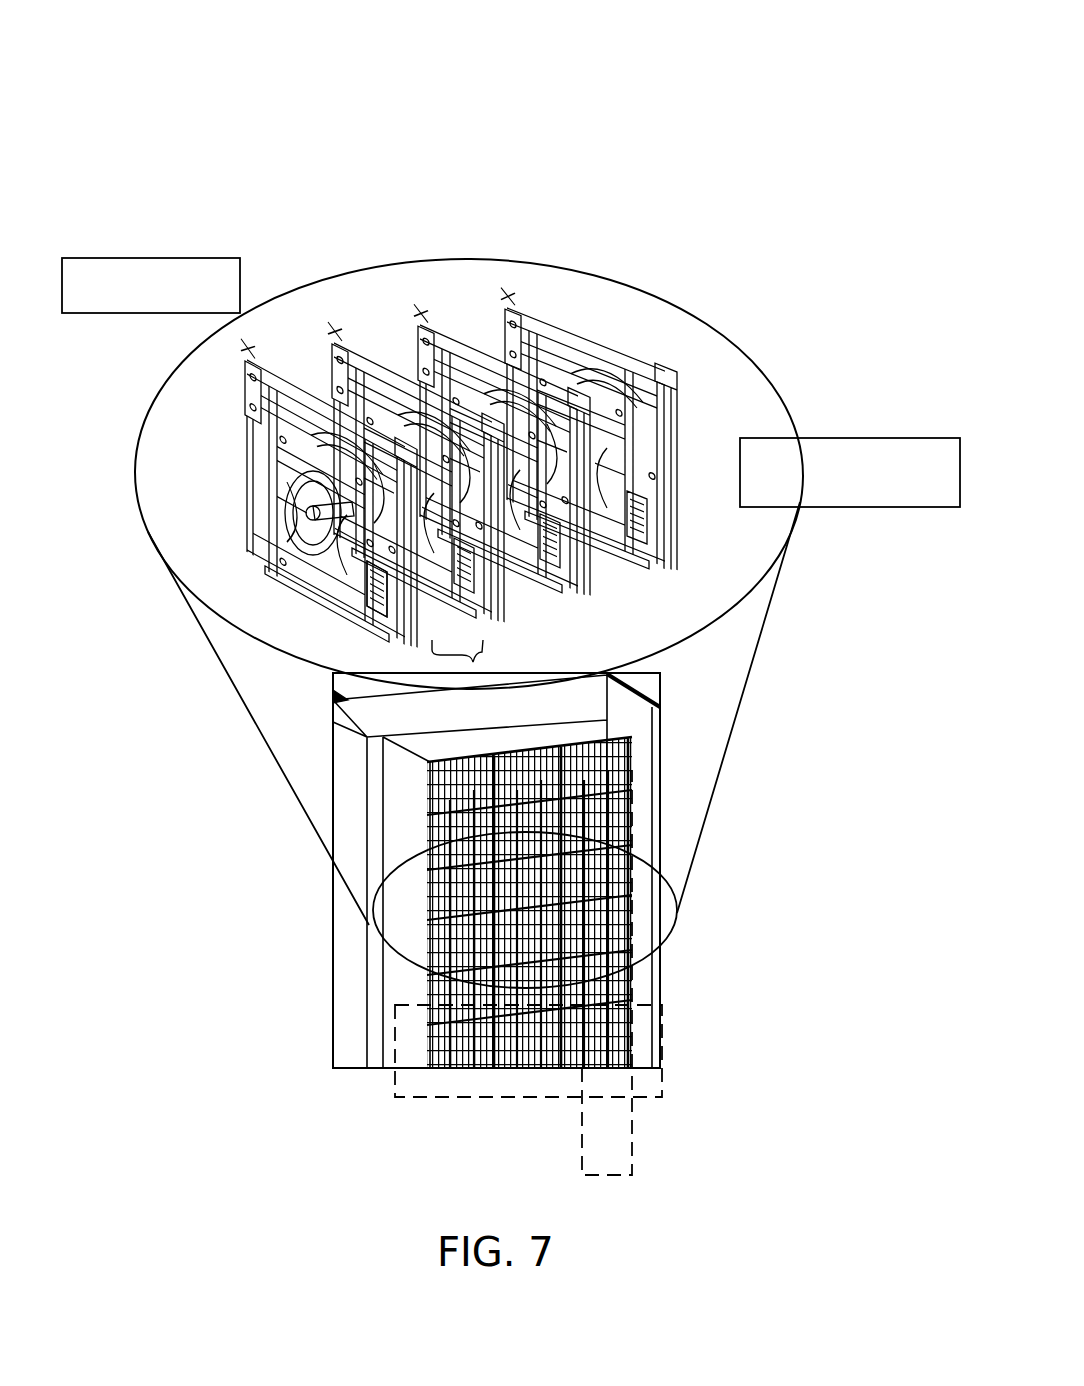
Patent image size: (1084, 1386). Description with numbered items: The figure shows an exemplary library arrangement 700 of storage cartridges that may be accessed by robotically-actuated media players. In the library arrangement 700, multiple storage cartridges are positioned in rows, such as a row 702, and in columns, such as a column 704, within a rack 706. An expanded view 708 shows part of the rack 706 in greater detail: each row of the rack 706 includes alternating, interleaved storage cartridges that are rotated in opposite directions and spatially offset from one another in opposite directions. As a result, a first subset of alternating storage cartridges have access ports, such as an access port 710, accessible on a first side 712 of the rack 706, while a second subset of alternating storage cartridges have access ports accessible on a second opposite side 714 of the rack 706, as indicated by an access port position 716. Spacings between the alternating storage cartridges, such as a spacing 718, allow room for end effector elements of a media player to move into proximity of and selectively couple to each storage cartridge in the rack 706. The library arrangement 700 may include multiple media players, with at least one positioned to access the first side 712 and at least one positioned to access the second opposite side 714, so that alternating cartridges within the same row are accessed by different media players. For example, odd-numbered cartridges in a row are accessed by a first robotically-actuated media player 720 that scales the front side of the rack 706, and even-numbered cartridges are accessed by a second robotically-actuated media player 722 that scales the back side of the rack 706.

The library arrangement 700 is at (137, 101).
The row 702 is at (388, 1068).
The column 704 is at (640, 1131).
The rack 706 is at (345, 956).
The expanded view 708 is at (511, 643).
The access port 710 is at (360, 603).
The first side 712 is at (660, 609).
The second opposite side 714 is at (400, 316).
The access port position 716 is at (290, 355).
The spacing 718 is at (476, 662).
The first robotically-actuated media player 720 is at (430, 627).
The second robotically-actuated media player 722 is at (248, 352).